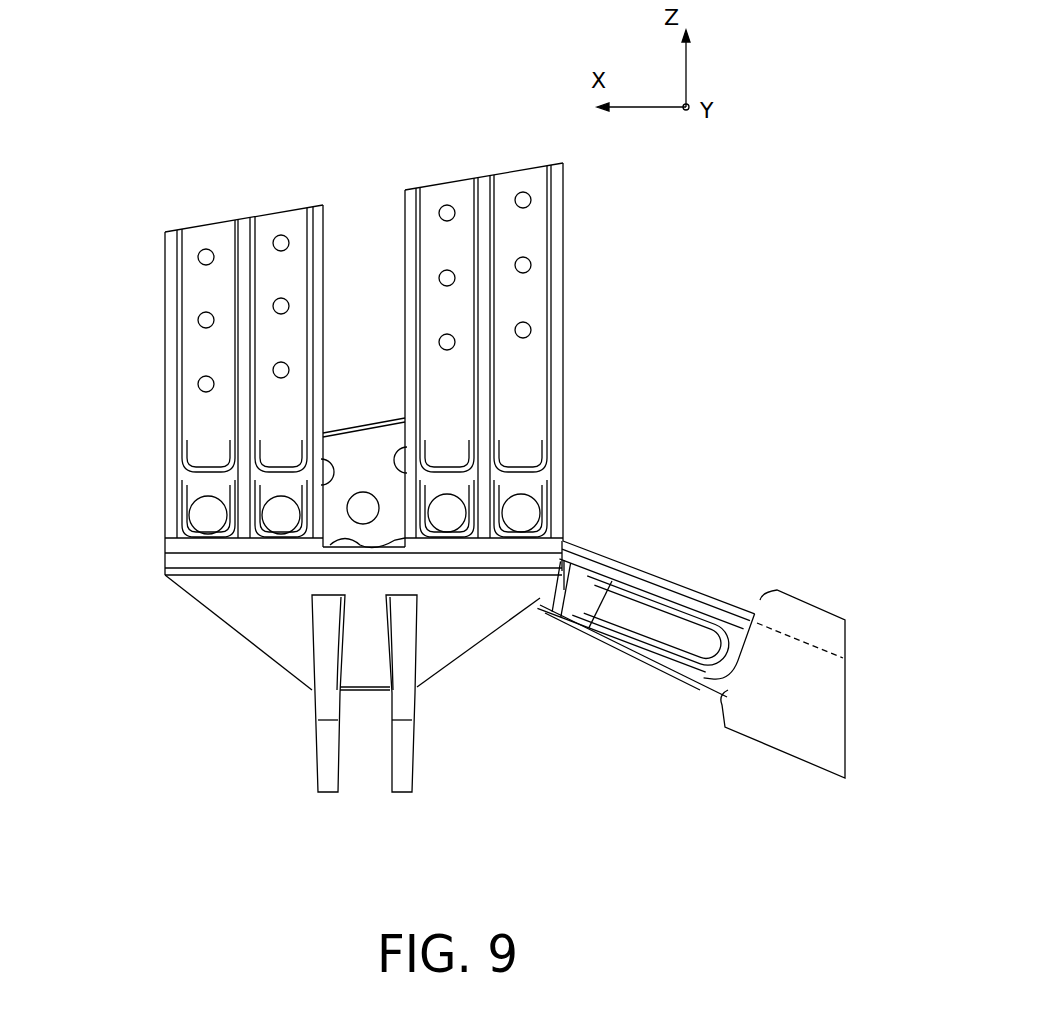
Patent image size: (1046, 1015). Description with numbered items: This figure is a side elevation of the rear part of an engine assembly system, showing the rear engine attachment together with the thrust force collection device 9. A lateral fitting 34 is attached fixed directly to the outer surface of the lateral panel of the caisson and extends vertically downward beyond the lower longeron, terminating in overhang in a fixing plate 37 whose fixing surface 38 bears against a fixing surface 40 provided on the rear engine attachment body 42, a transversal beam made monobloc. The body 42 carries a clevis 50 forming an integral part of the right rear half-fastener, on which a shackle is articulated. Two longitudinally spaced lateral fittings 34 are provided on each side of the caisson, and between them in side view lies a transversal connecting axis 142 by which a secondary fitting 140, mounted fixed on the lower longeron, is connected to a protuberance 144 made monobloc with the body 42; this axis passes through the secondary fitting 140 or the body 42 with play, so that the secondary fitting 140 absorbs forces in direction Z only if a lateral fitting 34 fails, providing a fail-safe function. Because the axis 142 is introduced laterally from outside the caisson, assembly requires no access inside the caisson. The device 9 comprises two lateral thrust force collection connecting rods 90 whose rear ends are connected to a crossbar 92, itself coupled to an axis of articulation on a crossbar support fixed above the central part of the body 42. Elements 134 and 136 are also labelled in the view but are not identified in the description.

The lateral fitting 34 is at (165, 297).
The secondary fitting 140 is at (436, 497).
The transversal connecting axis 142 is at (363, 510).
The rail end 134 is at (369, 427).
The rail end 136 is at (318, 488).
The fixing surface 40 is at (185, 553).
The fixing plate 37 is at (202, 550).
The fixing surface 38 is at (213, 555).
The rear engine attachment body 42 is at (243, 645).
The protuberance 144 is at (313, 560).
The clevis 50 is at (412, 790).
The device 9 is at (691, 611).
The crossbar 92 is at (665, 640).
The lateral thrust force collection connecting rod 90 is at (828, 775).